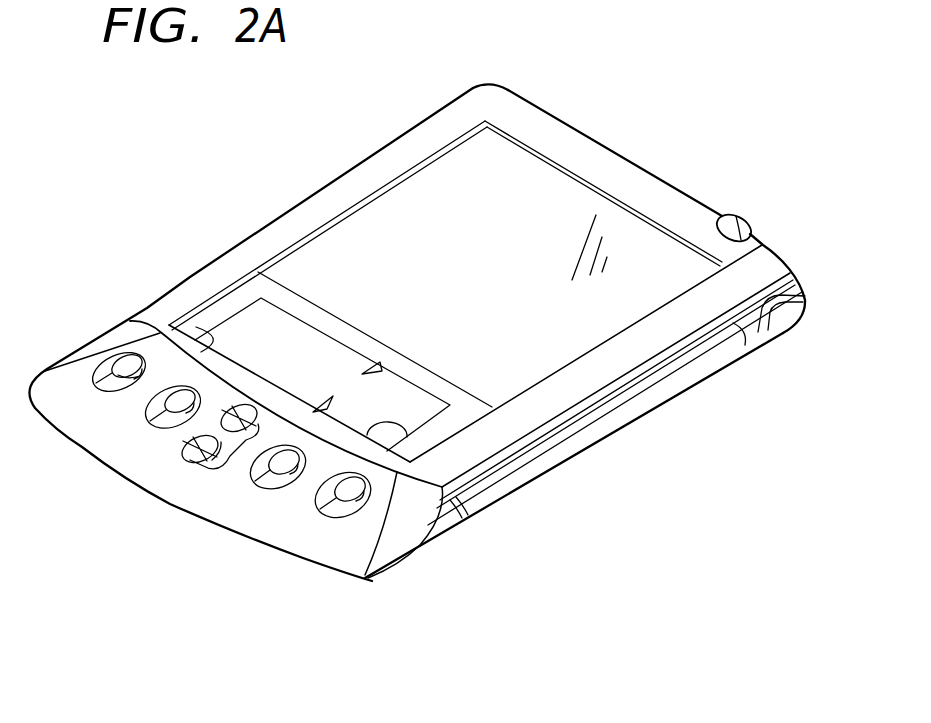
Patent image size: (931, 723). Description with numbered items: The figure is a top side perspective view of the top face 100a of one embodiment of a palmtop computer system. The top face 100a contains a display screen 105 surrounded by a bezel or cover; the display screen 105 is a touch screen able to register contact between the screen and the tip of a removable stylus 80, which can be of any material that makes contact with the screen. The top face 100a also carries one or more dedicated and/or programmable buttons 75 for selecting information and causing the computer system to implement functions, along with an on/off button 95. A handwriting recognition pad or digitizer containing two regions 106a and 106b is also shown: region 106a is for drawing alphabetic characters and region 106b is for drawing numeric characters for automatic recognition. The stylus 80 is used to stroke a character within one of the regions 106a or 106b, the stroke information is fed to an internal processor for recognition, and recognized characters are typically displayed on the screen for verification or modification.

The top face 100a is at (215, 106).
The display screen 105 is at (507, 190).
The on/off button 95 is at (753, 218).
The buttons 75 is at (127, 362).
The stylus 80 is at (610, 415).
The region 106a is at (297, 347).
The region 106b is at (387, 407).